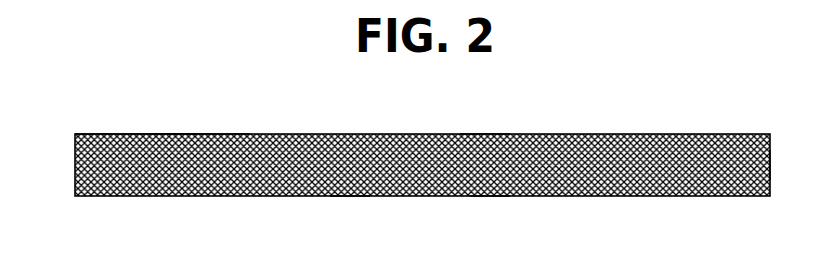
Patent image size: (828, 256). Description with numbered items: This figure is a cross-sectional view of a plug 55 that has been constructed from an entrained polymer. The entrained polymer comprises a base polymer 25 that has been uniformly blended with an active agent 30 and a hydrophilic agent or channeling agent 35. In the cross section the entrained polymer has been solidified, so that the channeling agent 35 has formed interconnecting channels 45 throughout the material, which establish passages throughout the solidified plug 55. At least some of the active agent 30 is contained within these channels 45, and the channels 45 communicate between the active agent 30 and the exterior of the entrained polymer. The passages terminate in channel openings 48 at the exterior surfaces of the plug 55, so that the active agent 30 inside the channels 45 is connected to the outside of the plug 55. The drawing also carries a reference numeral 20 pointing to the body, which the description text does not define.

The porous layer / body 20 is at (654, 112).
The base polymer 25 is at (107, 134).
The interconnecting channels 45 is at (177, 134).
The channeling agent 35 is at (223, 134).
The channel openings 48 is at (483, 134).
The active agent 30 is at (354, 172).
The plug 55 is at (791, 153).